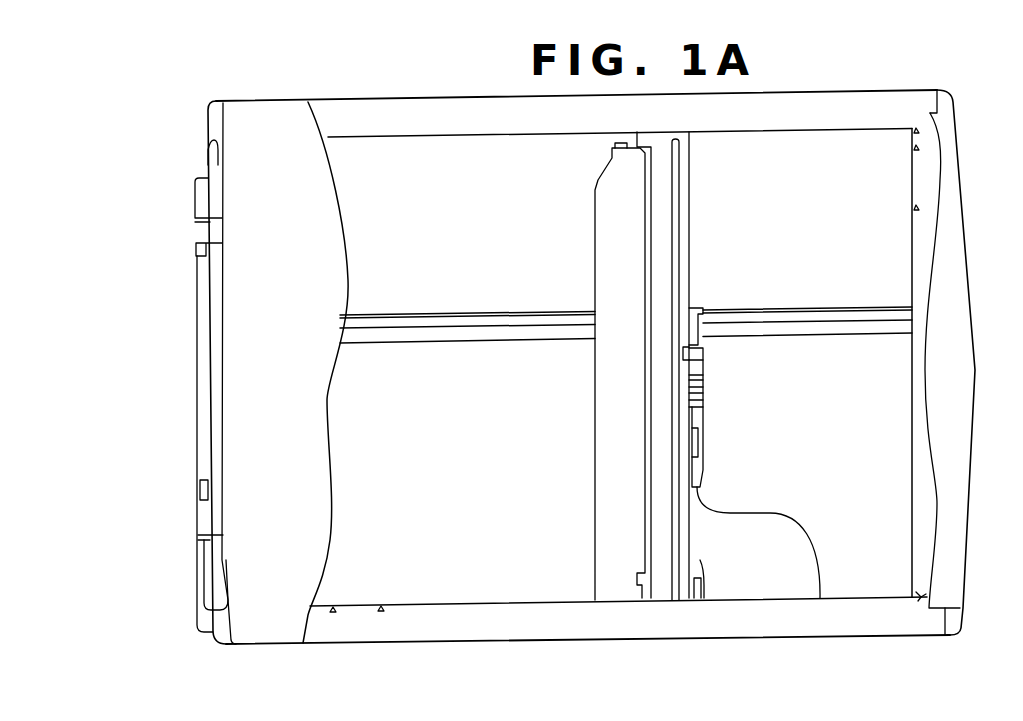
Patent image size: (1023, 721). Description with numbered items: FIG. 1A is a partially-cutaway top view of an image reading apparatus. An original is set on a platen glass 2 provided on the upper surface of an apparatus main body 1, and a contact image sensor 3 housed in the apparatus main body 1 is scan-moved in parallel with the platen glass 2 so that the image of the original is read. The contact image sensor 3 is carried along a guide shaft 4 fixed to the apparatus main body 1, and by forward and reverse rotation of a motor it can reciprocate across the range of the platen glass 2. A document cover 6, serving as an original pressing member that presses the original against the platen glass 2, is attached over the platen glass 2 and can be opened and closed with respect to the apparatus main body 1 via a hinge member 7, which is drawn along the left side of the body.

The apparatus main body 1 is at (824, 612).
The platen glass 2 is at (447, 592).
The contact image sensor 3 is at (690, 553).
The guide shaft 4 is at (490, 336).
The document cover 6 is at (298, 622).
The hinge member 7 is at (216, 521).